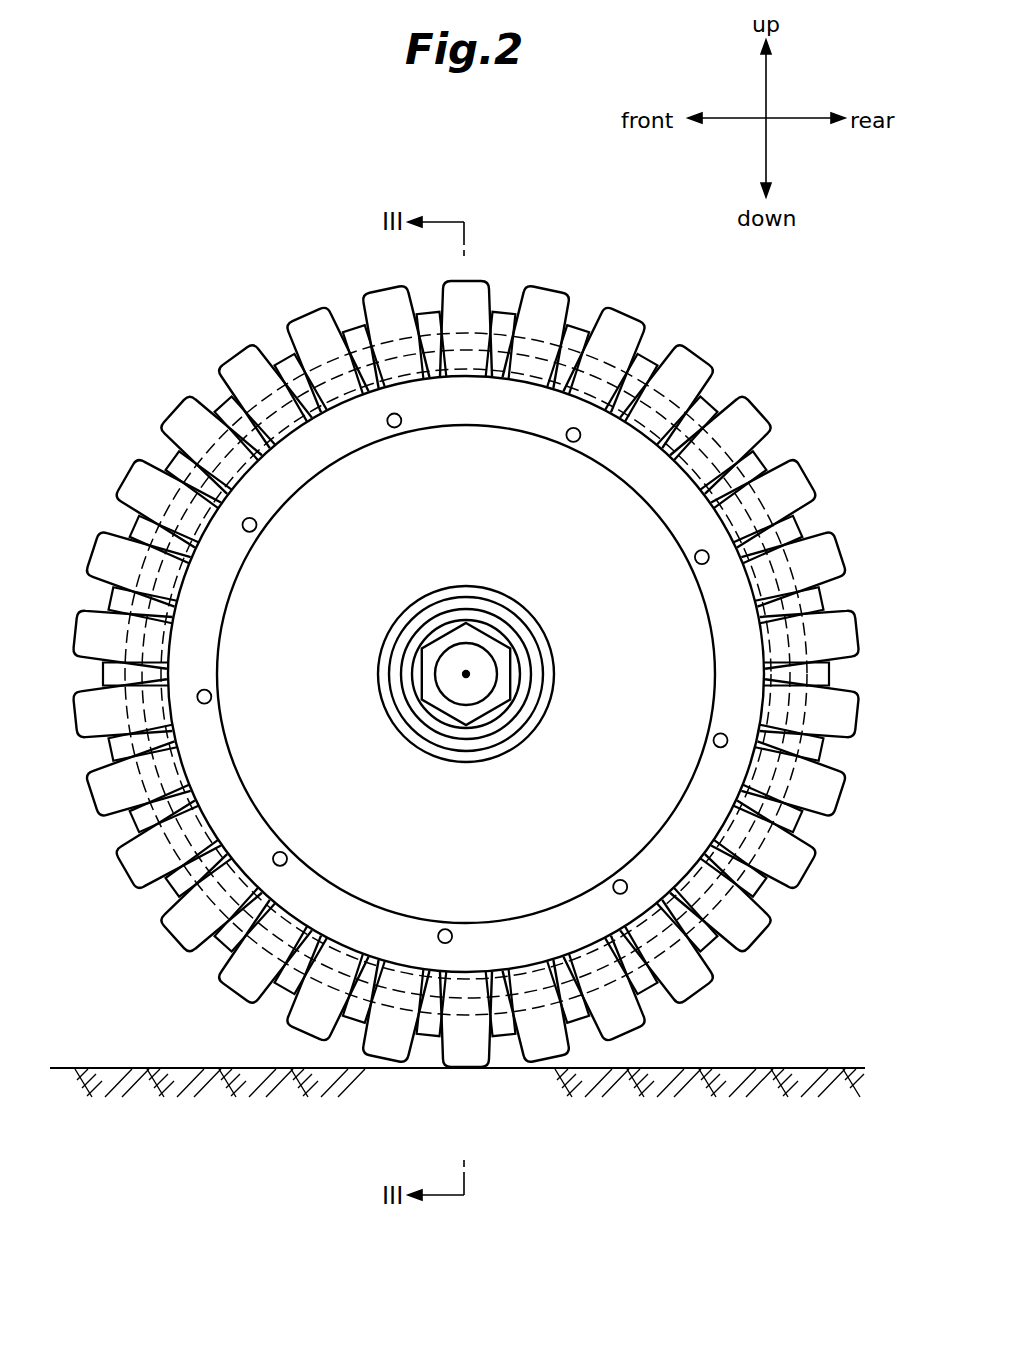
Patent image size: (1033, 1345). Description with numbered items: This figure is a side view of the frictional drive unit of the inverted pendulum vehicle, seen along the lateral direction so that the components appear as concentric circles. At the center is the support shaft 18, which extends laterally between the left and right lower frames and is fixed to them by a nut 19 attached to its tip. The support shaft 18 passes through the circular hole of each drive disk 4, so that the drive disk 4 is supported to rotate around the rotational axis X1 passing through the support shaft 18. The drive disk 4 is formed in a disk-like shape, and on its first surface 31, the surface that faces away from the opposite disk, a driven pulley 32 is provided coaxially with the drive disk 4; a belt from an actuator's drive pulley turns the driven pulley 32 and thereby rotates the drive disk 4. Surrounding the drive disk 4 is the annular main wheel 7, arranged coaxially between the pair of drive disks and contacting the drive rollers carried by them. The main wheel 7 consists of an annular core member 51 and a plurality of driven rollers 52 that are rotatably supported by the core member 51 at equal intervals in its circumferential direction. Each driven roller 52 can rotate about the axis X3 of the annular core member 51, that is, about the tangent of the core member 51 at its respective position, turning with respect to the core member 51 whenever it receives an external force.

The drive disk 4 is at (294, 621).
The main wheel 7 is at (707, 351).
The support shaft 18 is at (453, 660).
The nut 19 is at (447, 708).
The first surface 31 is at (247, 745).
The driven pulley 32 is at (212, 900).
The annular core member 51 is at (608, 352).
The driven roller 52 is at (853, 628).
The rotational axis X1 is at (466, 674).
The axis of the annular core member X3 is at (747, 507).